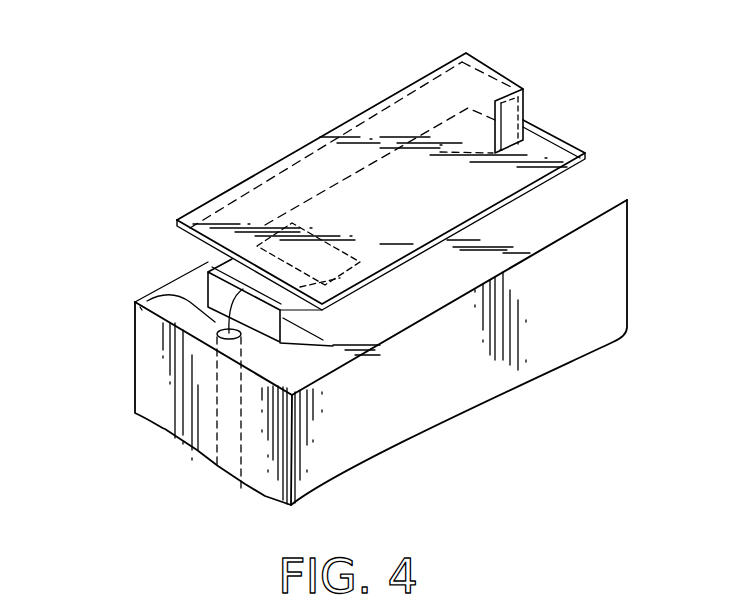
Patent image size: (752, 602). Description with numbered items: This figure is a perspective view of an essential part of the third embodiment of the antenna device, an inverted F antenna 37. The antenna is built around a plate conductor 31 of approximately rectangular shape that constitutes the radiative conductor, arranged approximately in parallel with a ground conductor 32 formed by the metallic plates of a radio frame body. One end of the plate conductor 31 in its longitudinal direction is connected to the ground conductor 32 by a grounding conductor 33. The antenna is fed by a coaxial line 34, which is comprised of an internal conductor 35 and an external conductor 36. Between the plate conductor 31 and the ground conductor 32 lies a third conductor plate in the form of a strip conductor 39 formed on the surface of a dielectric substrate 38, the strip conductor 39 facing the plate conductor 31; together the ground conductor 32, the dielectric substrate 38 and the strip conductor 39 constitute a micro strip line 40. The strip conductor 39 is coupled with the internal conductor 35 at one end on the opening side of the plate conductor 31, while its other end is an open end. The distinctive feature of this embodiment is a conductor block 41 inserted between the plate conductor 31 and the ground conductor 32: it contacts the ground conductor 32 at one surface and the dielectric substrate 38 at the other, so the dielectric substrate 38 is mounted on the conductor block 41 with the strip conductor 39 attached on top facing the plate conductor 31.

The plate conductor 31 is at (383, 136).
The ground conductor 32 is at (582, 195).
The grounding conductor 33 is at (515, 106).
The coaxial line 34 is at (210, 436).
The internal conductor 35 is at (207, 282).
The external conductor 36 is at (137, 306).
The inverted F antenna 37 is at (572, 51).
The dielectric substrate 38 is at (283, 313).
The strip conductor 39 is at (243, 288).
The micro strip line 40 is at (315, 332).
The conductor block 41 is at (305, 318).